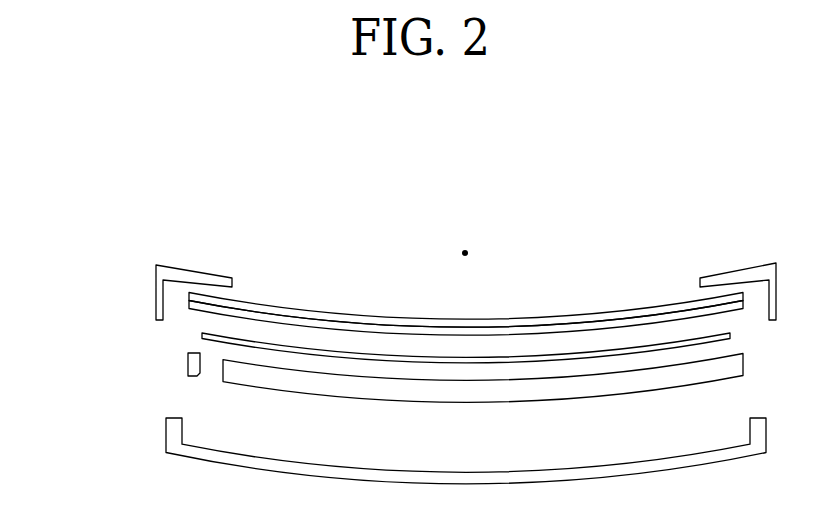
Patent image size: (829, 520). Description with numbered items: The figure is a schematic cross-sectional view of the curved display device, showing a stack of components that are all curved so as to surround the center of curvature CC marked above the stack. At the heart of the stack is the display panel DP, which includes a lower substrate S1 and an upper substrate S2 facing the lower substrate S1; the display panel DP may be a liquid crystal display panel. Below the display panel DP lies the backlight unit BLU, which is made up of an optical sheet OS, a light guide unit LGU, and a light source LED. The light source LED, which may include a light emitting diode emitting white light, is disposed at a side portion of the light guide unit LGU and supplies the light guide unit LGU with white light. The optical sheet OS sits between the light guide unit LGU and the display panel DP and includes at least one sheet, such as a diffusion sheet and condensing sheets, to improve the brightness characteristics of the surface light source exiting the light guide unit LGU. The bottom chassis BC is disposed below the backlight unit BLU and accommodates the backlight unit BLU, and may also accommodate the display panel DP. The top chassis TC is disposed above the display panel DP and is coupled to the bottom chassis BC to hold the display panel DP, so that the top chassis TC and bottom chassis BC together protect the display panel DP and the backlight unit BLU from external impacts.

The top chassis TC is at (176, 272).
The display panel DP is at (386, 309).
The upper substrate S2 is at (189, 298).
The lower substrate S1 is at (189, 305).
The backlight unit BLU is at (380, 378).
The optical sheet OS is at (203, 334).
The light source LED is at (190, 363).
The light guide unit LGU is at (227, 372).
The bottom chassis BC is at (176, 437).
The center of curvature CC is at (466, 251).